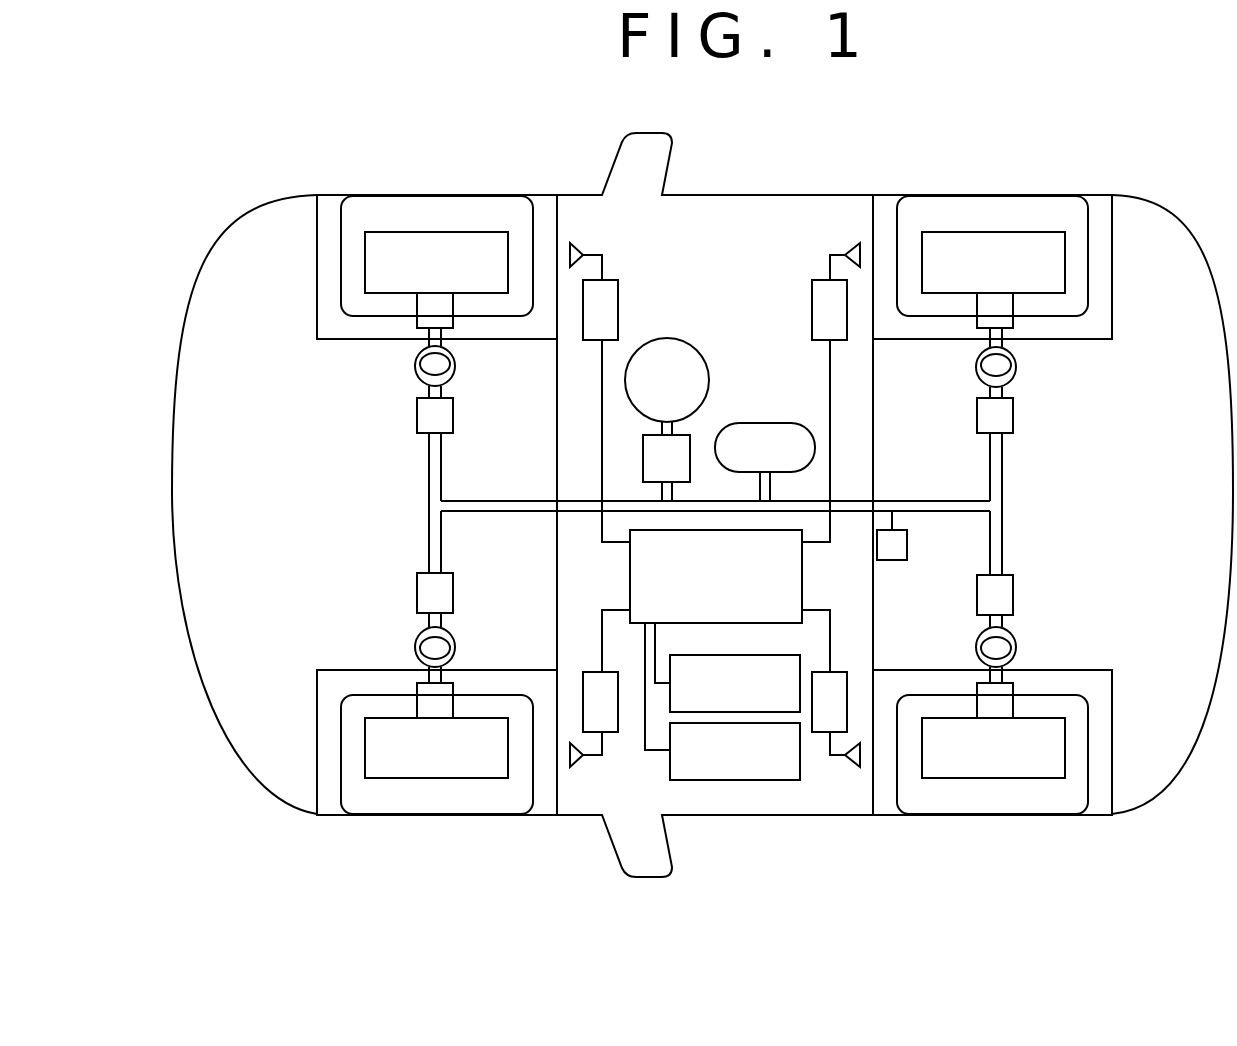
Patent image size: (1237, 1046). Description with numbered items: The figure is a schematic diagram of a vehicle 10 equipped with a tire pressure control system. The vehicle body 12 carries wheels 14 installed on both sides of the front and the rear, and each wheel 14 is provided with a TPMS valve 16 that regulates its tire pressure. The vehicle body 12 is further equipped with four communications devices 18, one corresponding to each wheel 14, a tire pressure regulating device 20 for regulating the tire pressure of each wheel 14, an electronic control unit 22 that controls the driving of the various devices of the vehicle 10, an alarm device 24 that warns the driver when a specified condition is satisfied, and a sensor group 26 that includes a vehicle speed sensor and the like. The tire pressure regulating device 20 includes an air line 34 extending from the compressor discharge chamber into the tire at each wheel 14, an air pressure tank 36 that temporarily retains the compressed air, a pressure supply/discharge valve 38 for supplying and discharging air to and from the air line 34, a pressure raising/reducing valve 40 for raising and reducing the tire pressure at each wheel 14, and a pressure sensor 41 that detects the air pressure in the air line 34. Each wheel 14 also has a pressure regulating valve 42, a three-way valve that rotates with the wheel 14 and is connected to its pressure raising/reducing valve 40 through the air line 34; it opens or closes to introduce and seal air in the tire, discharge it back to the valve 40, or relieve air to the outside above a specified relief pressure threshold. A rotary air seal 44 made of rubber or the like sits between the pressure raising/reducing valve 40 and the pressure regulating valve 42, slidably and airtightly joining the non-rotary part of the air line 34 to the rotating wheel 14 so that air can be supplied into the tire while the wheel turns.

The vehicle 10 is at (939, 151).
The vehicle body 12 is at (753, 195).
The wheel 14 is at (433, 194).
The TPMS valve 16 is at (473, 232).
The communications device 18 is at (620, 295).
The tire pressure regulating device 20 is at (1058, 494).
The electronic control unit 22 is at (802, 578).
The alarm device 24 is at (783, 655).
The sensor group 26 is at (773, 780).
The air line 34 is at (920, 501).
The air pressure tank 36 is at (765, 423).
The pressure supply/discharge valve 38 is at (690, 445).
The pressure raising/reducing valve 40 is at (453, 418).
The pressure sensor 41 is at (907, 545).
The pressure regulating valve 42 is at (455, 305).
The rotary air seal 44 is at (455, 362).